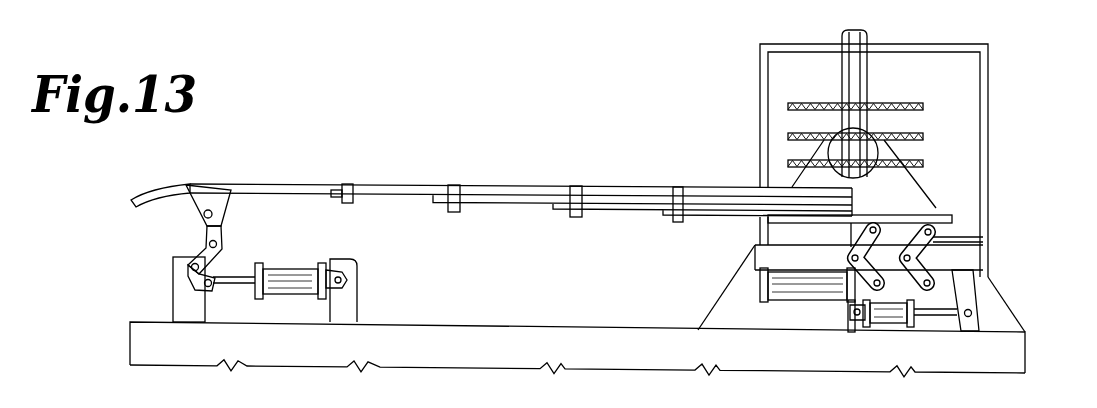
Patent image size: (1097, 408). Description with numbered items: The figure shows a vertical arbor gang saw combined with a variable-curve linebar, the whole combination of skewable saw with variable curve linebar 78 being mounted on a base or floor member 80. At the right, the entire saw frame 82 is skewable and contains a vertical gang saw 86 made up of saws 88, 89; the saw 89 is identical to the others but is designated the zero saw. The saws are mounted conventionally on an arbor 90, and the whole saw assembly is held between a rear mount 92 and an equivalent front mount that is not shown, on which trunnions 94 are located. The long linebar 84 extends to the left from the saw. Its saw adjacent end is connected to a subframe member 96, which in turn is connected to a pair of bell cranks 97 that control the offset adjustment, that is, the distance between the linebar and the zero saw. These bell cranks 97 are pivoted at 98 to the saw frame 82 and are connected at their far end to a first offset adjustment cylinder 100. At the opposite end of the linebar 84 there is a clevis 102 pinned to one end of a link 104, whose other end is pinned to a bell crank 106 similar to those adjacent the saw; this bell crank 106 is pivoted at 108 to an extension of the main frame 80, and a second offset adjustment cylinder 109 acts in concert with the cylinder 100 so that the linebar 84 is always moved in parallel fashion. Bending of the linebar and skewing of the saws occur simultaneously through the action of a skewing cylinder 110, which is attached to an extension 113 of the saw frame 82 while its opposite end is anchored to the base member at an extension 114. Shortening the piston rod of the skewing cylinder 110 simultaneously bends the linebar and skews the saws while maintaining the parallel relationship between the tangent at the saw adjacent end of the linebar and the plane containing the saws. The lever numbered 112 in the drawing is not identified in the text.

The combination of skewable saw with variable curve linebar 78 is at (580, 133).
The base or floor member 80 is at (150, 354).
The saw frame 82 is at (988, 132).
The linebar 84 is at (388, 184).
The vertical gang saw 86 is at (913, 90).
The saws 88 is at (930, 137).
The zero saw 89 is at (922, 162).
The arbor 90 is at (868, 35).
The rear mount 92 is at (1003, 295).
The trunnions 94 is at (830, 153).
The subframe member 96 is at (943, 230).
The bell cranks 97 is at (960, 242).
The pivot of bell cranks 98 is at (945, 258).
The first offset adjustment cylinder 100 is at (805, 290).
The clevis 102 is at (210, 197).
The link 104 is at (204, 224).
The bell crank 106 is at (193, 246).
The pivot of bell crank 108 is at (190, 278).
The second offset adjustment cylinder 109 is at (287, 268).
The skewing cylinder 110 is at (895, 318).
The lever 112 is at (973, 322).
The extension of saw frame 113 is at (972, 303).
The extension of base member 114 is at (855, 325).